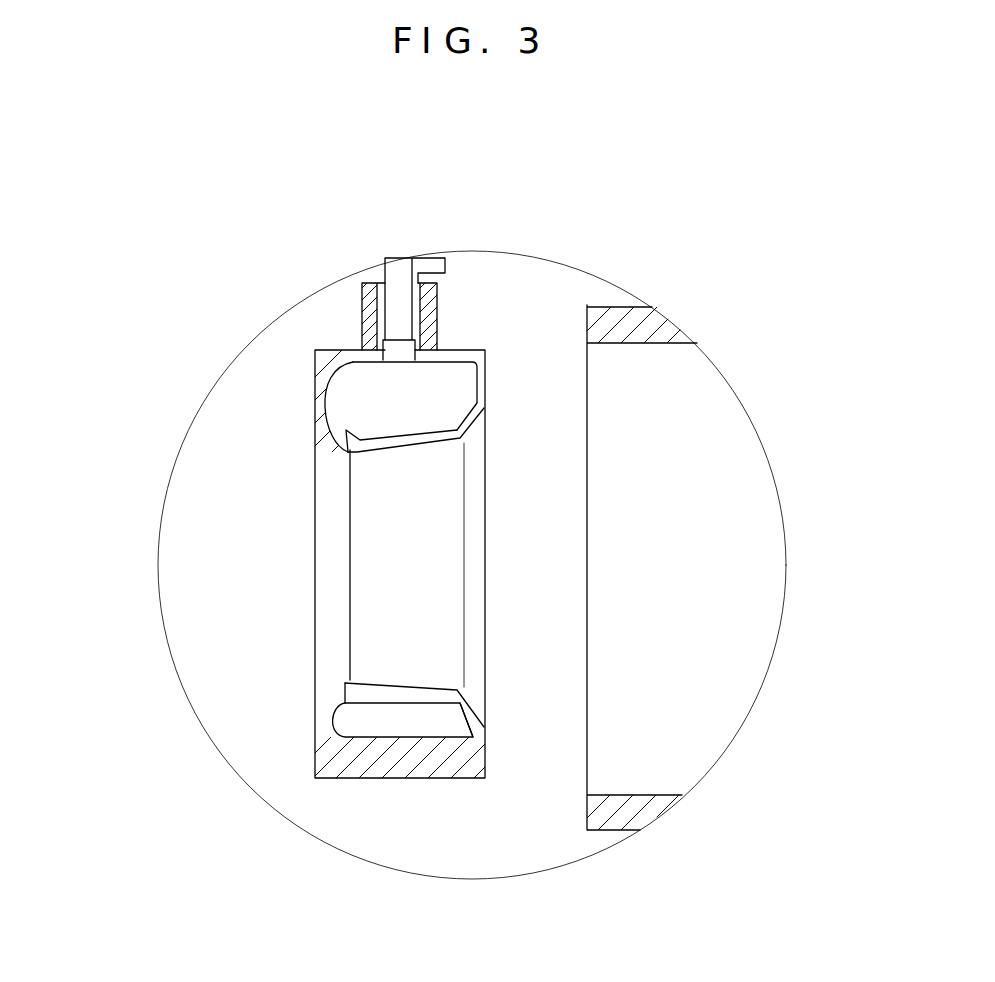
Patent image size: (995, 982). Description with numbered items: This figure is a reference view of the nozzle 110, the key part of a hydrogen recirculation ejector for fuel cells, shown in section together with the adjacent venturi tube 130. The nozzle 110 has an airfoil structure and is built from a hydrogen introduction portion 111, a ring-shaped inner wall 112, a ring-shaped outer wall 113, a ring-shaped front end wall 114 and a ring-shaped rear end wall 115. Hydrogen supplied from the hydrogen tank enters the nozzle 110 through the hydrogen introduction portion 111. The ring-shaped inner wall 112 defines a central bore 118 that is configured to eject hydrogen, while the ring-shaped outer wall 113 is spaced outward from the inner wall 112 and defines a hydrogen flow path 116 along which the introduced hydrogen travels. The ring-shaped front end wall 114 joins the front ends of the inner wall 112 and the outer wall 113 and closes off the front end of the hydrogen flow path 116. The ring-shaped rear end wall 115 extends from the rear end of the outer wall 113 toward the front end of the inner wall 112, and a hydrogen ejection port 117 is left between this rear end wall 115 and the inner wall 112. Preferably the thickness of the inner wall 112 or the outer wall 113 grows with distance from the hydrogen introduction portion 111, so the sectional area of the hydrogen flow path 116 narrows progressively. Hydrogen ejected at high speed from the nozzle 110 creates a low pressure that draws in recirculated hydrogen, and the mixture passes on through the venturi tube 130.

The nozzle 110 is at (153, 227).
The hydrogen introduction portion 111 is at (380, 283).
The ring-shaped inner wall 112 is at (395, 432).
The ring-shaped outer wall 113 is at (337, 347).
The ring-shaped front end wall 114 is at (440, 390).
The ring-shaped rear end wall 115 is at (345, 682).
The hydrogen flow path 116 is at (440, 272).
The hydrogen ejection port 117 is at (348, 452).
The bore 118 is at (350, 580).
The venturi tube 130 is at (723, 468).